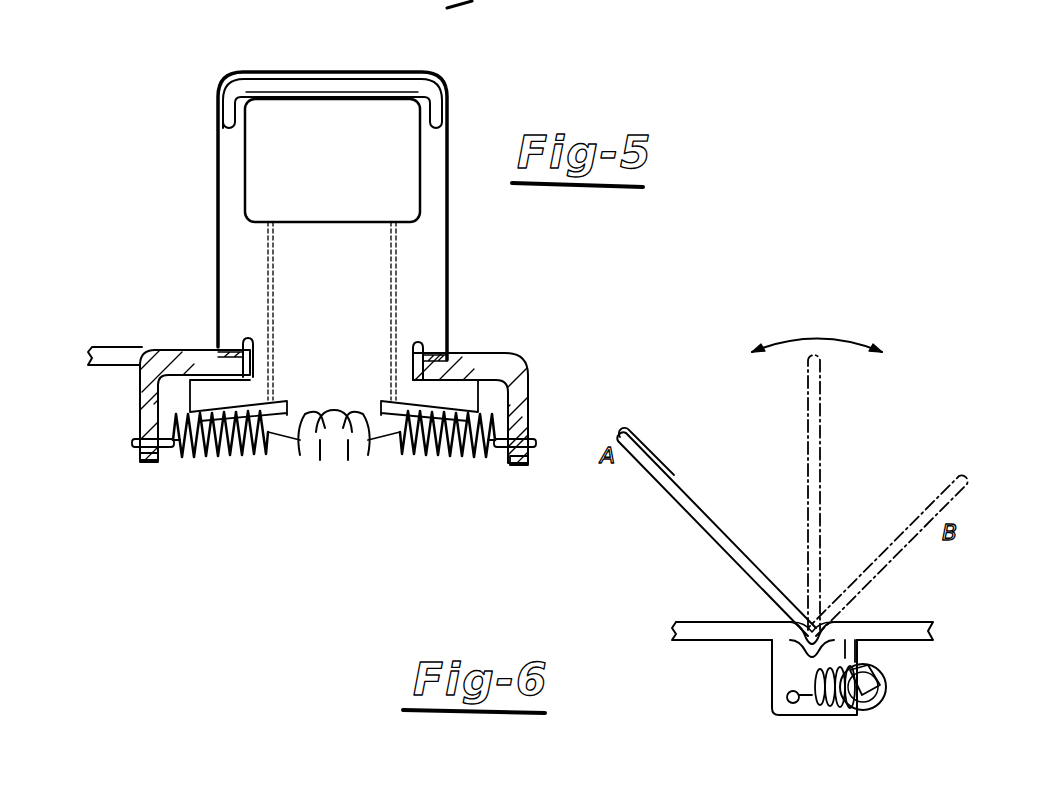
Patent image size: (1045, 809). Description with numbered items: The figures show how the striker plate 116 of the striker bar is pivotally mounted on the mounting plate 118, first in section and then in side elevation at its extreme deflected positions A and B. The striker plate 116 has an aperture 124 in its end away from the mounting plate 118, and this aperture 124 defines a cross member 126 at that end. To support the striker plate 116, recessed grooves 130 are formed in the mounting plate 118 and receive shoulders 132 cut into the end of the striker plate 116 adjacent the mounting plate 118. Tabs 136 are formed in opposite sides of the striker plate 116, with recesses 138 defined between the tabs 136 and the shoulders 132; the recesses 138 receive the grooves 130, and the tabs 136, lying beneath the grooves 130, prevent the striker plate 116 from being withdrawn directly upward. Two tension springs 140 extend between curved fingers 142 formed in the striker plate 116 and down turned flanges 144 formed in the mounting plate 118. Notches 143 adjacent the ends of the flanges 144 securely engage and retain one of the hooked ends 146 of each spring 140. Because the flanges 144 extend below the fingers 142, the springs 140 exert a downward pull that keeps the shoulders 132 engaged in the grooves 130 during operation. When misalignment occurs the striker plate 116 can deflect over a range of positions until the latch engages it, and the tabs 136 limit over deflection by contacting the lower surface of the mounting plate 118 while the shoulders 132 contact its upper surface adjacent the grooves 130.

In FIG. 5, the striker plate 116 is at (452, 90).
In FIG. 6, the striker plate 116 is at (830, 428).
In FIG. 5, the mounting plate 118 is at (108, 340).
In FIG. 6, the mounting plate 118 is at (682, 623).
In FIG. 5, the aperture 124 is at (258, 160).
In FIG. 5, the cross member 126 is at (282, 80).
In FIG. 6, the cross member 126 is at (620, 432).
In FIG. 5, the recessed grooves 130 is at (183, 351).
In FIG. 6, the recessed grooves 130 is at (808, 650).
In FIG. 5, the shoulders 132 is at (245, 345).
In FIG. 6, the shoulders 132 is at (805, 630).
In FIG. 5, the tabs 136 is at (152, 398).
In FIG. 5, the recesses 138 is at (435, 350).
In FIG. 5, the tension springs 140 is at (242, 456).
In FIG. 6, the tension springs 140 is at (850, 705).
In FIG. 5, the curved fingers 142 is at (305, 440).
In FIG. 6, the curved fingers 142 is at (858, 648).
In FIG. 5, the notches 143 is at (143, 465).
In FIG. 6, the notches 143 is at (793, 704).
In FIG. 5, the down turned flanges 144 is at (140, 422).
In FIG. 5, the hooked ends 146 is at (172, 440).